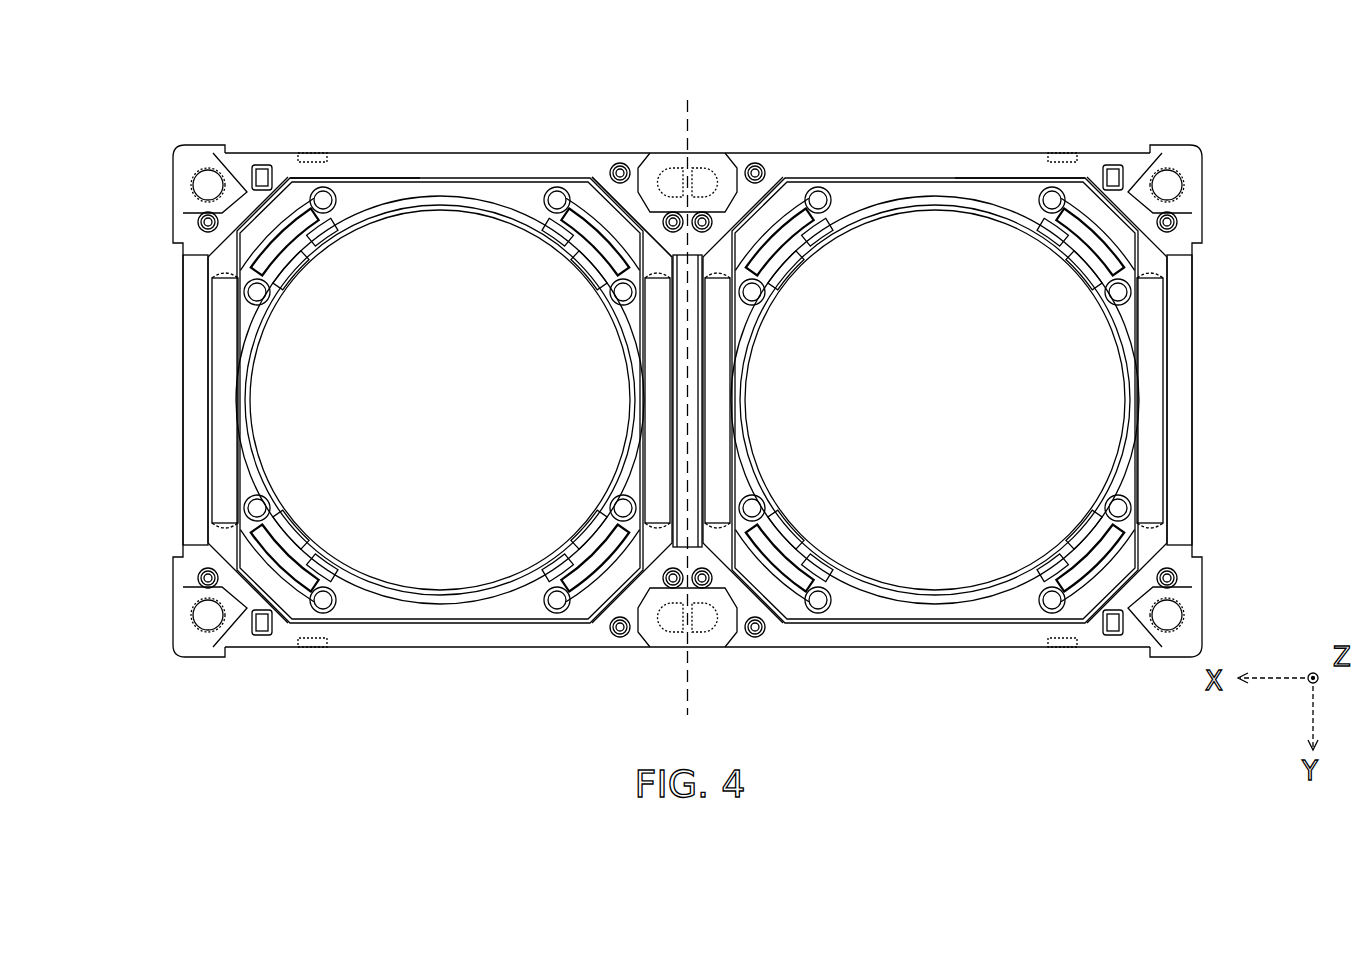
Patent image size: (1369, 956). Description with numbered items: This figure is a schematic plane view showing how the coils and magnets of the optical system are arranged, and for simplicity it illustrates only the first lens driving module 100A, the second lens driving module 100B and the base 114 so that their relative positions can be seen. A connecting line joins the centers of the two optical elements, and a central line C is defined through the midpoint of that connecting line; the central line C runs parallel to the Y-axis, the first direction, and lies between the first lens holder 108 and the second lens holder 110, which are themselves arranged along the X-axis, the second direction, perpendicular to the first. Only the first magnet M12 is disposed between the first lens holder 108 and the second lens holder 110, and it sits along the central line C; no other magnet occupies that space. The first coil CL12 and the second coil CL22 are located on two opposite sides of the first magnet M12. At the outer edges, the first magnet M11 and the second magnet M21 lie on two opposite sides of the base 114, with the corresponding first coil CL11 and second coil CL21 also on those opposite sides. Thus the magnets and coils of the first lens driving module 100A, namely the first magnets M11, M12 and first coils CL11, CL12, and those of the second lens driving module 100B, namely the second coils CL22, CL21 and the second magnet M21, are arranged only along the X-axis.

The first lens driving module 100A is at (437, 145).
The second lens driving module 100B is at (930, 145).
The first lens holder 108 is at (340, 195).
The second lens holder 110 is at (1025, 190).
The base 114 is at (597, 165).
The central line C is at (687, 393).
The first magnet M11 is at (197, 333).
The first magnet M12 is at (692, 333).
The second magnet M21 is at (1180, 333).
The first coil CL11 is at (215, 390).
The first coil CL12 is at (652, 390).
The second coil CL21 is at (1155, 390).
The second coil CL22 is at (722, 390).